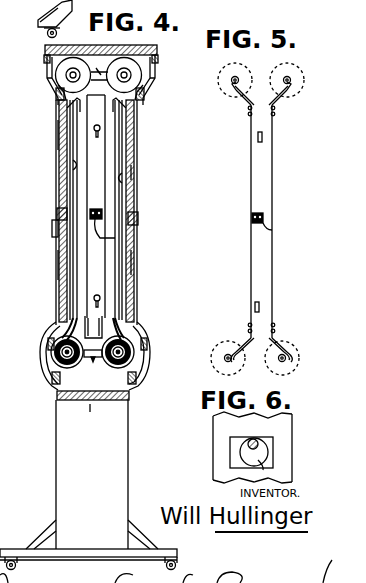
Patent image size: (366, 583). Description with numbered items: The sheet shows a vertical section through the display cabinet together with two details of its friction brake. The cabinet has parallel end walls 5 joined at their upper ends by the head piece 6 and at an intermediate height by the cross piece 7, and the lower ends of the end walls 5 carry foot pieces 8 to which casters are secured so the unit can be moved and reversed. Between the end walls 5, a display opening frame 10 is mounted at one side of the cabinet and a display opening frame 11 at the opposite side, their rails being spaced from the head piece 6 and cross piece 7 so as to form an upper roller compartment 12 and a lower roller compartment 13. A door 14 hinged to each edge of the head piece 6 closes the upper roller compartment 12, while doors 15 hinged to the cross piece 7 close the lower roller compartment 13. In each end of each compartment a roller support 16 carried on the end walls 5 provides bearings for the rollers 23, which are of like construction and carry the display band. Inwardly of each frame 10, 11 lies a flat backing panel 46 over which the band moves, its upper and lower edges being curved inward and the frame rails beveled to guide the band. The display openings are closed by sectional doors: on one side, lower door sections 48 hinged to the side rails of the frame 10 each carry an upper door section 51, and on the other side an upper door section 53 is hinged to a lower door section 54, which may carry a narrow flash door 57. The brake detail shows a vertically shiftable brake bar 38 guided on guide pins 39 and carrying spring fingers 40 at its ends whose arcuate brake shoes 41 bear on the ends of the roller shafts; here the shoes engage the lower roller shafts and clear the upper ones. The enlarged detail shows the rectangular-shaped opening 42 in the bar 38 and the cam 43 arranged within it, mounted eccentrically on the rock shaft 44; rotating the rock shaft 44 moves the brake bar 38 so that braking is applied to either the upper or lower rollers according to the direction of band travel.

In FIG. 4, the end walls 5 is at (72, 451).
In FIG. 4, the head piece 6 is at (157, 47).
In FIG. 4, the cross piece 7 is at (88, 410).
In FIG. 4, the foot pieces 8 is at (22, 545).
In FIG. 4, the display opening frame 10 is at (60, 106).
In FIG. 4, the display opening frame 11 is at (146, 112).
In FIG. 4, the upper roller compartment 12 is at (146, 72).
In FIG. 4, the lower roller compartment 13 is at (128, 402).
In FIG. 4, the door 14 is at (55, 70).
In FIG. 4, the doors 15 is at (40, 360).
In FIG. 4, the roller support 16 is at (101, 65).
In FIG. 4, the rollers 23 is at (142, 96).
In FIG. 4, the brake bar 38 is at (108, 160).
In FIG. 5, the brake bar 38 is at (263, 186).
In FIG. 6, the brake bar 38 is at (279, 437).
In FIG. 4, the guide pins 39 is at (100, 132).
In FIG. 5, the spring fingers 40 is at (243, 101).
In FIG. 5, the brake shoes 41 is at (291, 89).
In FIG. 4, the rectangular-shaped opening 42 is at (95, 210).
In FIG. 5, the rectangular-shaped opening 42 is at (252, 226).
In FIG. 6, the rectangular-shaped opening 42 is at (232, 455).
In FIG. 4, the cam 43 is at (115, 238).
In FIG. 5, the cam 43 is at (272, 230).
In FIG. 6, the cam 43 is at (263, 466).
In FIG. 6, the rock shaft 44 is at (233, 441).
In FIG. 4, the backing panel 46 is at (66, 166).
In FIG. 4, the lower door sections 48 is at (62, 268).
In FIG. 4, the upper door section 51 is at (62, 138).
In FIG. 4, the upper door section 53 is at (134, 187).
In FIG. 4, the lower door section 54 is at (138, 220).
In FIG. 4, the flash door 57 is at (134, 266).